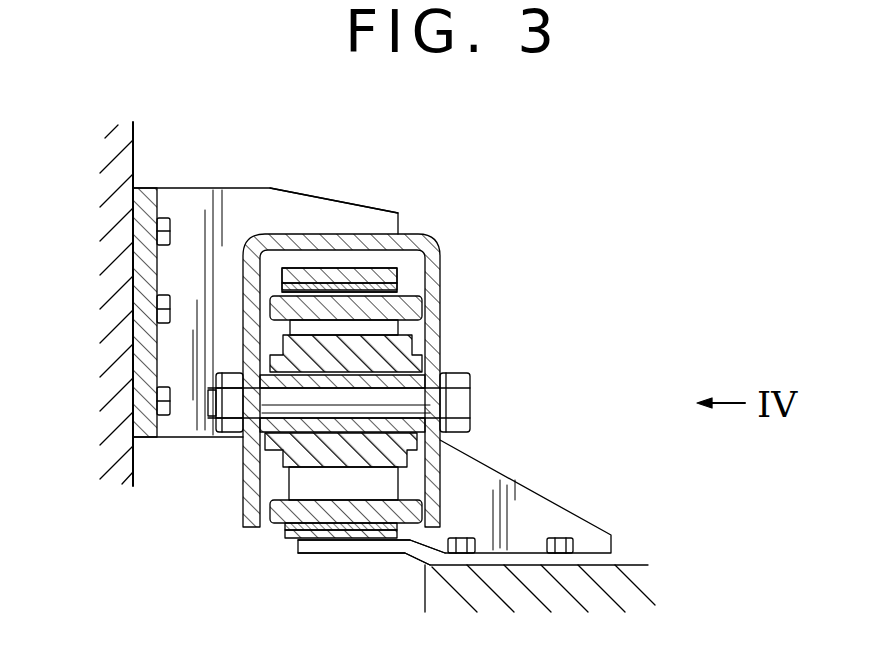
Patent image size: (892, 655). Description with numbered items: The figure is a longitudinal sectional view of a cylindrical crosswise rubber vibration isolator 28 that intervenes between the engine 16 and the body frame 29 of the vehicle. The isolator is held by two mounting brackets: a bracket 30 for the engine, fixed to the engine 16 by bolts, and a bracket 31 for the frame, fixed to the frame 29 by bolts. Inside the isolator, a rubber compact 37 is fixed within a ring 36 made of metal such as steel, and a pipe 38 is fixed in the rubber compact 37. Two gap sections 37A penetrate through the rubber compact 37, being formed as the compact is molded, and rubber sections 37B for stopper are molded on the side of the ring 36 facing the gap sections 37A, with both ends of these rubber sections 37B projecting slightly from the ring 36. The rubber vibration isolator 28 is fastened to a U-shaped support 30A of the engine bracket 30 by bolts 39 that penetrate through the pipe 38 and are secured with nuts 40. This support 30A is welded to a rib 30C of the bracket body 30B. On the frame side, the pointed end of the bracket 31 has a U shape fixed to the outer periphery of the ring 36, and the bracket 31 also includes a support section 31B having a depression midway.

The engine 16 is at (112, 210).
The rubber vibration isolator 28 is at (412, 333).
The body frame 29 is at (632, 598).
The bracket for the engine 30 is at (228, 188).
The U-shaped support 30A is at (437, 257).
The bracket body 30B is at (147, 190).
The rib 30C is at (314, 192).
The bracket for the frame 31 is at (579, 513).
The support section 31B is at (387, 556).
The ring 36 is at (403, 279).
The rubber compact 37 is at (412, 358).
The gap sections 37A is at (352, 290).
The rubber sections for stopper 37B is at (418, 307).
The pipe 38 is at (416, 442).
The bolts 39 is at (432, 397).
The nuts 40 is at (236, 440).